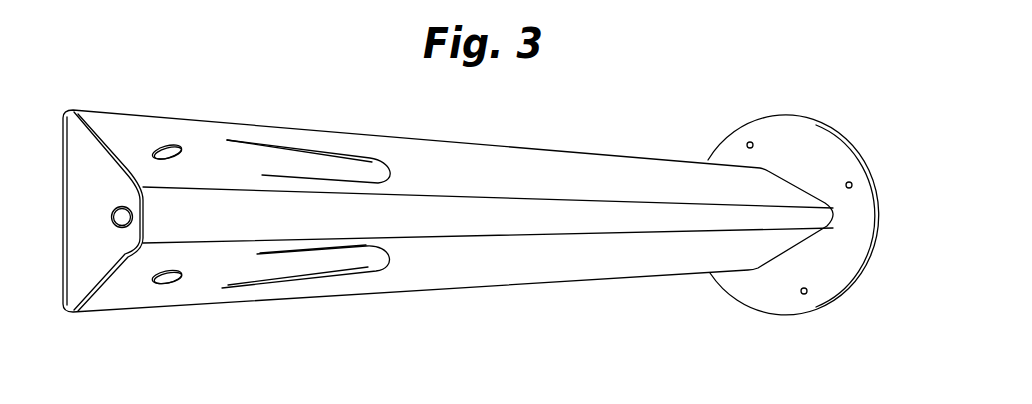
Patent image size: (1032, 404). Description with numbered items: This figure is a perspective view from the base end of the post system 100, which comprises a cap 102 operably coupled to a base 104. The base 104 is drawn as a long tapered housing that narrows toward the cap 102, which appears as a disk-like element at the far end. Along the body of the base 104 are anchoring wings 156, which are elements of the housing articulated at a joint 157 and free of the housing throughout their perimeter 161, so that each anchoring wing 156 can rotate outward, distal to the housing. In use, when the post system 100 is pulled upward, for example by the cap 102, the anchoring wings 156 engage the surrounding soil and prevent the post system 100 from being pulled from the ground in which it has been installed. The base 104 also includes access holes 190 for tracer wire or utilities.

The post system 100 is at (616, 100).
The cap 102 is at (833, 303).
The base 104 is at (542, 272).
The anchoring wings 156 is at (298, 265).
The joint 157 is at (227, 280).
The perimeter 161 is at (337, 282).
The access holes 190 is at (163, 283).